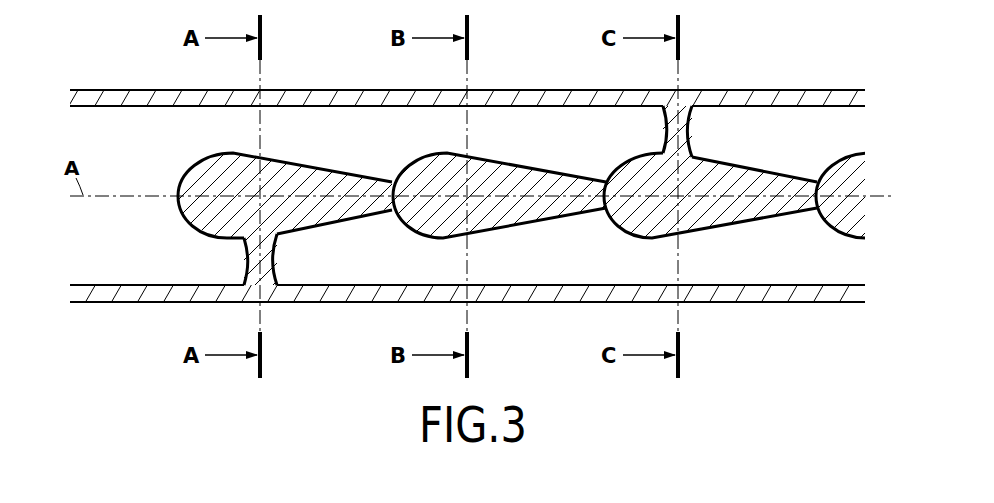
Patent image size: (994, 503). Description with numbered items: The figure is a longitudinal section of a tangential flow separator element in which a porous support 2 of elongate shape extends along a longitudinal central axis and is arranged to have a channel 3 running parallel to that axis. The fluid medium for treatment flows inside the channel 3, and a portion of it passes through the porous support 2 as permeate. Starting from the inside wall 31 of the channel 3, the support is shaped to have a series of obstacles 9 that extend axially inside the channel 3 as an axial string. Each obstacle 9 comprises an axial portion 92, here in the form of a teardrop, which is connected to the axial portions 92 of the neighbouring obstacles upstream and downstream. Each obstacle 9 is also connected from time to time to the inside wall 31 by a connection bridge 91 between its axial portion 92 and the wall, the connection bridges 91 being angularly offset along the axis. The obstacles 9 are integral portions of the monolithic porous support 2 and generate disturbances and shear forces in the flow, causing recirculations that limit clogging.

The porous support 2 is at (528, 97).
The channel 3 is at (131, 150).
The inside wall 31 is at (134, 285).
The obstacle 9 is at (521, 172).
The connection bridge 91 is at (243, 263).
The axial portion 92 is at (283, 163).